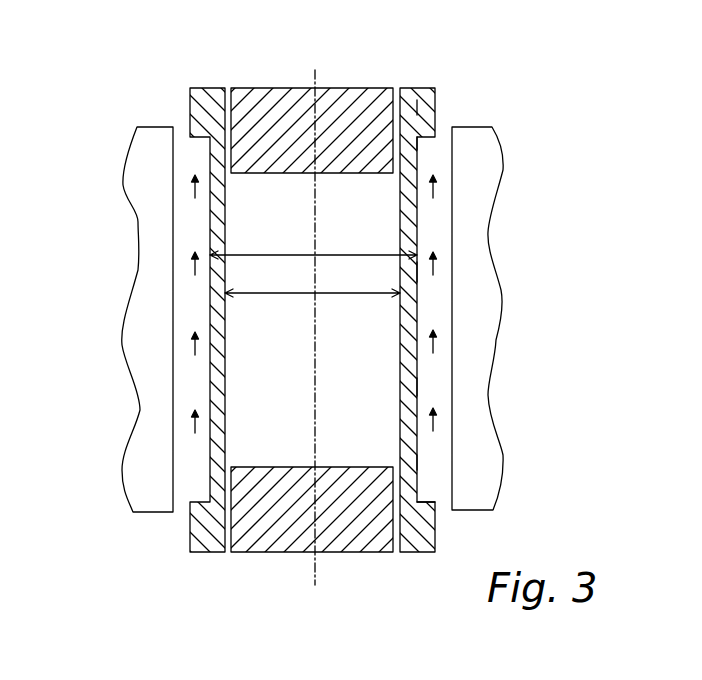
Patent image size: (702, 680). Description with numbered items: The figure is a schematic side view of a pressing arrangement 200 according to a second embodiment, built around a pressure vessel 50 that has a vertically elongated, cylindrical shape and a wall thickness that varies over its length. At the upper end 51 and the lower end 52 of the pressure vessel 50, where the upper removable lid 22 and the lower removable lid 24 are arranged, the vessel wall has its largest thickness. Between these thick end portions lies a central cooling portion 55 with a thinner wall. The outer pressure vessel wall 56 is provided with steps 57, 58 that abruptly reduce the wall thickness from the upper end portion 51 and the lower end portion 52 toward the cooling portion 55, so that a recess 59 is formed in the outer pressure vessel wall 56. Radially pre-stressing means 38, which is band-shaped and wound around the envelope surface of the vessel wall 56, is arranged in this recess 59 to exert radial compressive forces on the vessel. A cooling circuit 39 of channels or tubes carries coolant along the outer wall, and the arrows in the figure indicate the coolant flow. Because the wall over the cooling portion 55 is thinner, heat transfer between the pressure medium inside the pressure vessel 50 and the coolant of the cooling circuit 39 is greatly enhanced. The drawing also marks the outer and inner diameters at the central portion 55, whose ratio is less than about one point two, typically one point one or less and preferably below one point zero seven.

The pressing arrangement 200 is at (370, 58).
The upper removable lid 22 is at (279, 88).
The lower removable lid 24 is at (343, 553).
The pressure vessel 50 is at (422, 88).
The upper end 51 is at (420, 105).
The lower end 52 is at (435, 528).
The cooling portion 55 is at (416, 272).
The outer pressure vessel wall 56 is at (417, 387).
The step 57 is at (428, 502).
The step 58 is at (418, 137).
The recess 59 is at (425, 455).
The radially pre-stressing means 38 is at (140, 407).
The cooling circuit 39 is at (193, 292).